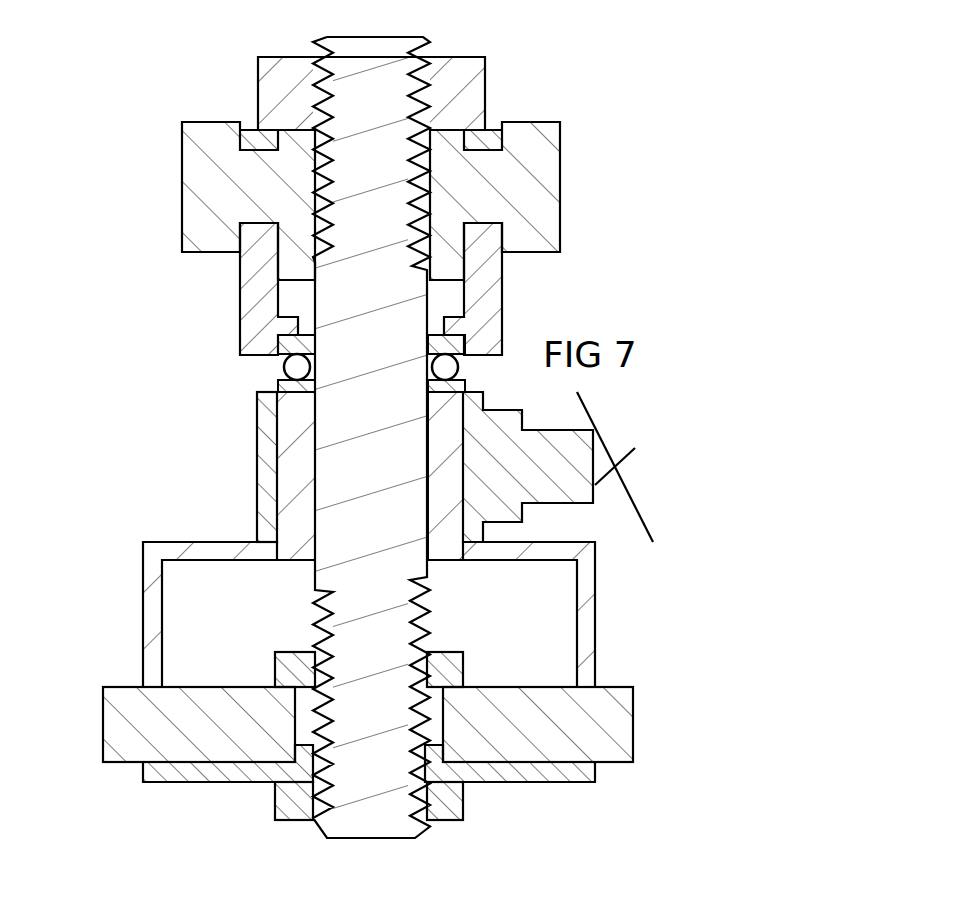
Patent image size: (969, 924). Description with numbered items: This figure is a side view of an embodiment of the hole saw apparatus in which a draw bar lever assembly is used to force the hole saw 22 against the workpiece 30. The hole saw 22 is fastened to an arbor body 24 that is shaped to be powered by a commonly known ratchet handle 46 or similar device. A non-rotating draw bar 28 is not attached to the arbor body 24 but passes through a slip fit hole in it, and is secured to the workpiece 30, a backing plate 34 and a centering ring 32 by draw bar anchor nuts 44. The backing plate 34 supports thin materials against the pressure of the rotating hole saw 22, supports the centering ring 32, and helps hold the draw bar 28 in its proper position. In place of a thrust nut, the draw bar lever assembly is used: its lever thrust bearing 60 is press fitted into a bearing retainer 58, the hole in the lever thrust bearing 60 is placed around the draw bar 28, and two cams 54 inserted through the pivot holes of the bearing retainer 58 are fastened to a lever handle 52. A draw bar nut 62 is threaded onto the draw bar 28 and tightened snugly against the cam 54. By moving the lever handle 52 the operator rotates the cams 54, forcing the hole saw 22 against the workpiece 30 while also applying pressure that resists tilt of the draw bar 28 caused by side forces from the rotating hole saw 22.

The hole saw 22 is at (152, 668).
The arbor body 24 is at (285, 495).
The draw bar 28 is at (390, 57).
The workpiece 30 is at (186, 696).
The centering ring 32 is at (467, 782).
The backing plate 34 is at (188, 782).
The draw bar anchor nuts 44 is at (455, 645).
The ratchet handle 46 is at (593, 510).
The lever handle 52 is at (552, 158).
The cams 54 is at (297, 270).
The bearing retainer 58 is at (485, 317).
The lever thrust bearing 60 is at (277, 377).
The draw bar nut 62 is at (267, 75).